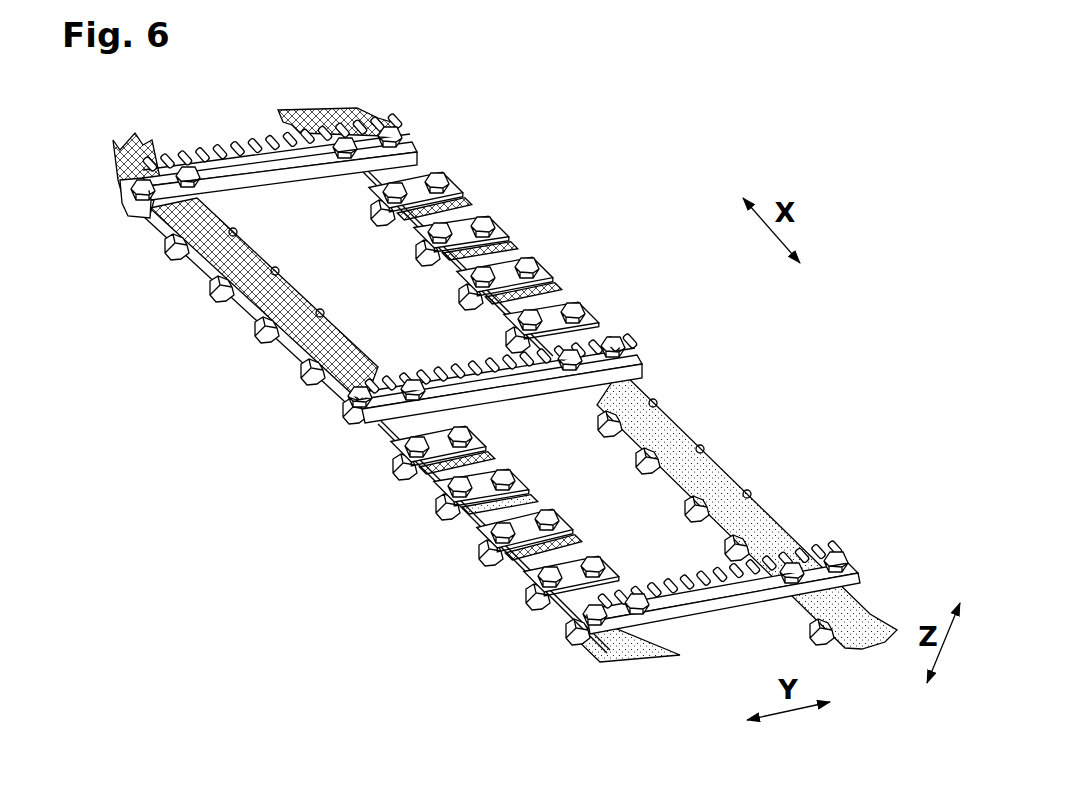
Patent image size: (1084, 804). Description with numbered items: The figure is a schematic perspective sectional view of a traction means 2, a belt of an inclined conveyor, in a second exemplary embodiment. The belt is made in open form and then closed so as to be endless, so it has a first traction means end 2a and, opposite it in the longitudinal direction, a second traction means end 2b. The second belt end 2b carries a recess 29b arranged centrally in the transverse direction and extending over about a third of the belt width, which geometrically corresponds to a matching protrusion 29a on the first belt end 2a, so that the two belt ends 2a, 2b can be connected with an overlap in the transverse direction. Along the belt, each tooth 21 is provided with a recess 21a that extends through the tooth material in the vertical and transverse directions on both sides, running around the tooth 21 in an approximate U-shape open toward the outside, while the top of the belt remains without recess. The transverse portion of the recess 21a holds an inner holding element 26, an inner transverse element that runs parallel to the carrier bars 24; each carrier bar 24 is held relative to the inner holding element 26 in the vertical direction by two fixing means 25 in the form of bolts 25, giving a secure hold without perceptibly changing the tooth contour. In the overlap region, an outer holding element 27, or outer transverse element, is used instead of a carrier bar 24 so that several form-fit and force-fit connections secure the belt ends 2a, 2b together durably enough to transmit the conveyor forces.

The traction means 2 is at (548, 146).
The first traction means end 2a is at (318, 103).
The second traction means end 2b is at (790, 506).
The tooth 21 is at (420, 252).
The recess 21a is at (272, 344).
The carrier bar 24 is at (228, 176).
The fixing means 25 is at (358, 128).
The inner holding element 26 is at (378, 214).
The outer holding element 27 is at (455, 228).
The protrusion 29a is at (510, 560).
The recess 29b is at (520, 512).